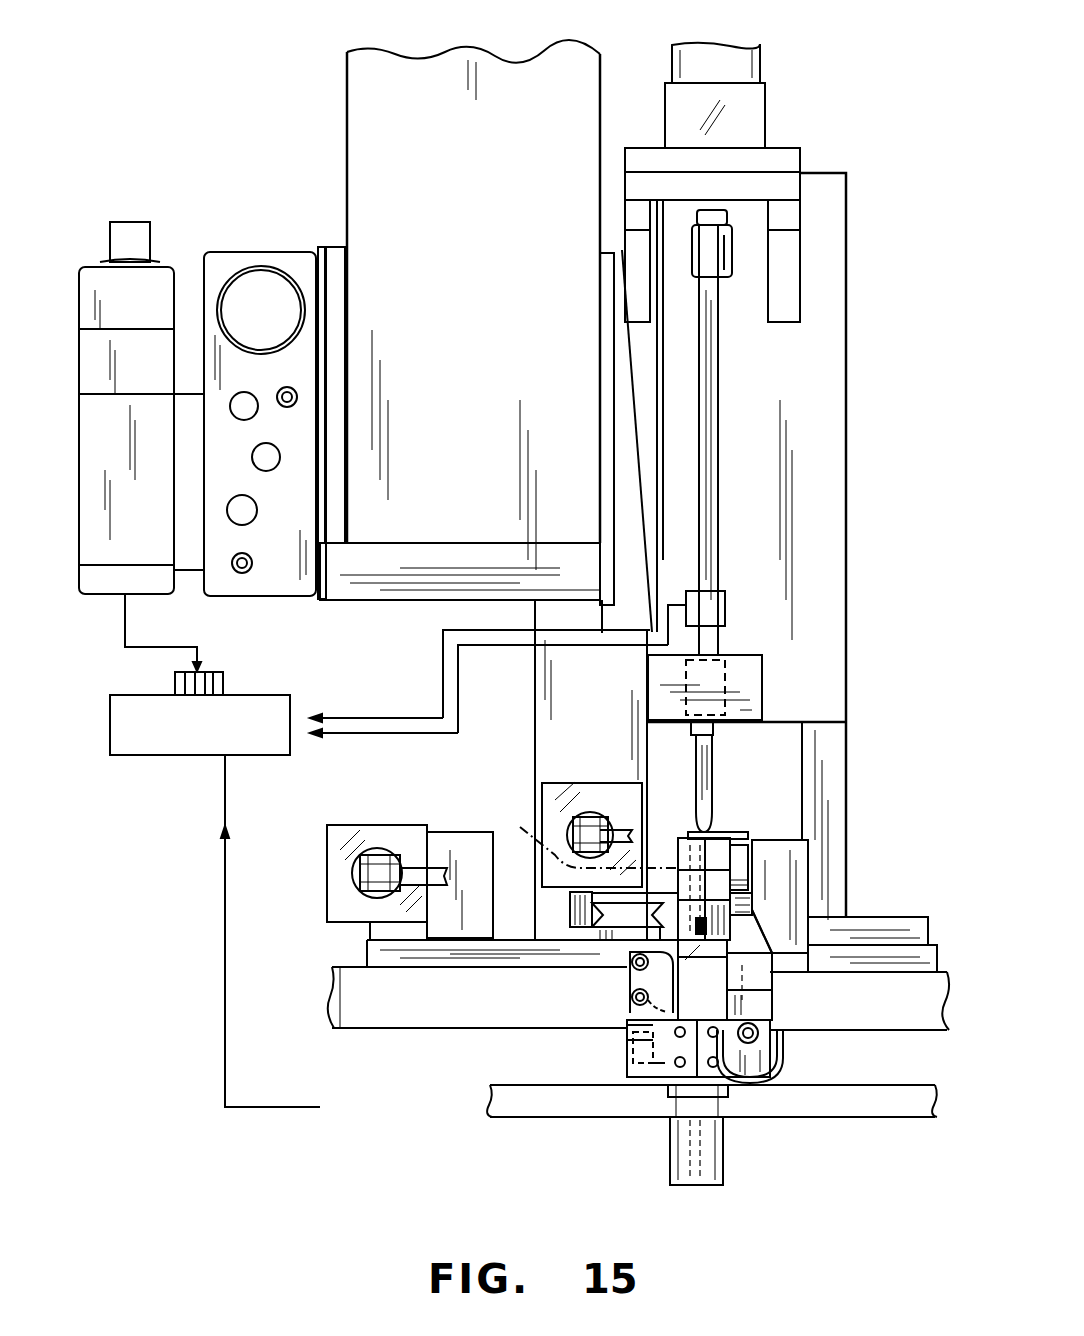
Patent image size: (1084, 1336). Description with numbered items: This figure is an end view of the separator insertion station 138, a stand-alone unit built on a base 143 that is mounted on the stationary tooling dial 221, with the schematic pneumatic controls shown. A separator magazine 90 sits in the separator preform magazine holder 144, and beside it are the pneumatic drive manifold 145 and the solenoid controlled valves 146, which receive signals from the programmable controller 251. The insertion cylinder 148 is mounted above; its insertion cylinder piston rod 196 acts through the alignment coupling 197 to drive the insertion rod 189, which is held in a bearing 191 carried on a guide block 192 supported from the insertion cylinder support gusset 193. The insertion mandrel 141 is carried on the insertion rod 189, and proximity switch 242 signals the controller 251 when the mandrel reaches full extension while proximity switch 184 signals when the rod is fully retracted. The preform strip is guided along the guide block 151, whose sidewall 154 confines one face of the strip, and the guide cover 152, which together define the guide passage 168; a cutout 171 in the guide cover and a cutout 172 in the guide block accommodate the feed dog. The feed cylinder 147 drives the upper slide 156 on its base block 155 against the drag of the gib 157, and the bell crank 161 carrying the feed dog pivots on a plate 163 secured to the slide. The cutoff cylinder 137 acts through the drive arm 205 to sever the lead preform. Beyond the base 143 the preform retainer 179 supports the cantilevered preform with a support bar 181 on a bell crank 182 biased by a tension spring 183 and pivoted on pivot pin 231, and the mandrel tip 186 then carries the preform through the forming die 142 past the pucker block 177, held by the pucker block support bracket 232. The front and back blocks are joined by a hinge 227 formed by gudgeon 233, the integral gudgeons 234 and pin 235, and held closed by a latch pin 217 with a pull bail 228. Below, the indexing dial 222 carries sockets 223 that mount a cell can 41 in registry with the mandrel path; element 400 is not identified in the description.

The separator magazine 90 is at (480, 61).
The separator preform magazine holder 144 is at (363, 603).
The solenoid controlled valves 146 is at (80, 358).
The pneumatic drive manifold 145 is at (245, 255).
The insertion cylinder 148 is at (757, 65).
The insertion cylinder support gusset 193 is at (838, 520).
The insertion rod 189 is at (713, 478).
The insertion cylinder piston rod 196 is at (706, 205).
The alignment coupling 197 is at (700, 250).
The proximity switch 184 is at (718, 258).
The proximity switch 242 is at (727, 598).
The guide block 192 is at (755, 662).
The bearing 191 is at (755, 682).
The insertion mandrel 141 is at (712, 752).
The mandrel tip 186 is at (707, 800).
The programmable controller 251 is at (272, 695).
The feed cylinder 147 is at (575, 790).
The bell crank 161 is at (622, 800).
The cutoff cylinder 137 is at (348, 832).
The drive arm 205 is at (436, 868).
The plate 163 is at (581, 834).
The upper slide 156 is at (570, 907).
The gib 157 is at (570, 923).
The guide passage 168 is at (627, 919).
The base block 155 is at (585, 935).
The base 143 is at (385, 950).
The stationary tooling dial 221 is at (900, 1022).
The indexing dial 222 is at (880, 1118).
The sockets 223 is at (725, 1163).
The cell can 41 is at (683, 1182).
The forming die 142 is at (667, 1062).
The hinge 227 is at (620, 1062).
The gudgeon 233 is at (622, 1052).
The preform retainer 179 is at (615, 1045).
The integral gudgeons 234 is at (625, 1025).
The pin 235 is at (640, 1075).
The pull bail 228 is at (790, 1060).
The latch pin 217 is at (770, 1030).
The pivot pin 231 is at (632, 962).
The bell crank 182 is at (630, 990).
The tension spring 183 is at (660, 1002).
The guide cover 152 is at (692, 858).
The sidewall 154 is at (710, 860).
The cutout 171 is at (688, 888).
The guide block 151 is at (735, 852).
The slot 400 is at (750, 900).
The cutout 172 is at (750, 880).
The pucker block support bracket 232 is at (767, 942).
The pucker block 177 is at (723, 932).
The support bar 181 is at (697, 948).
The insertion station 138 is at (868, 866).